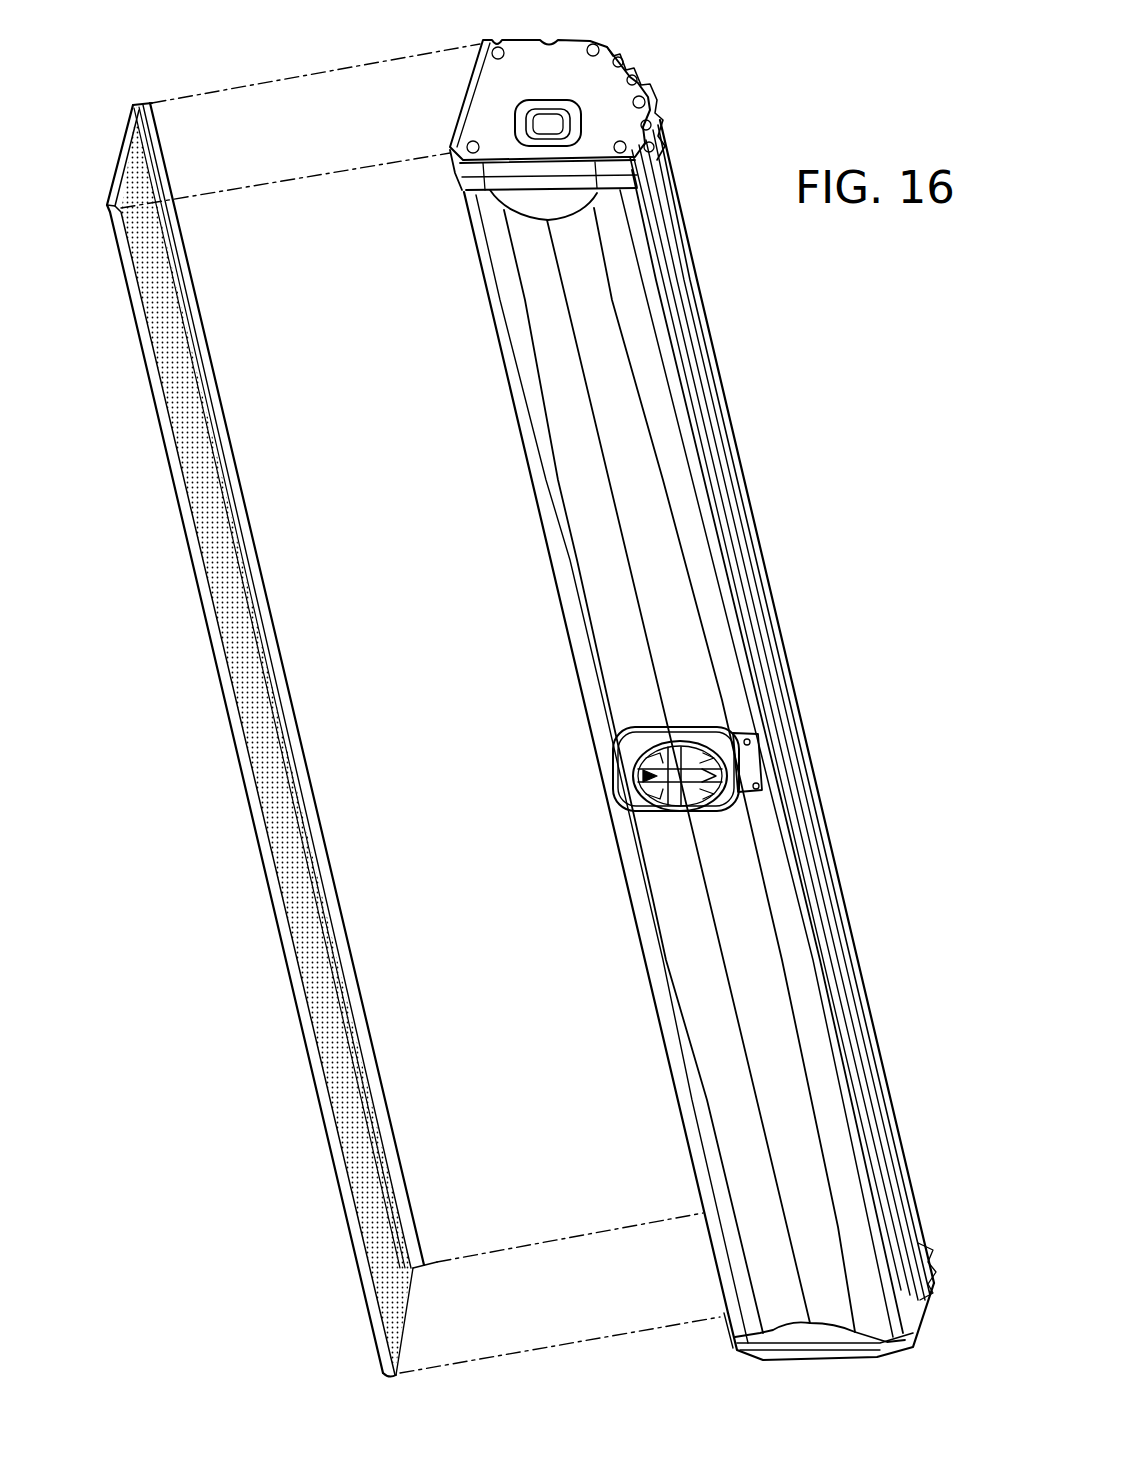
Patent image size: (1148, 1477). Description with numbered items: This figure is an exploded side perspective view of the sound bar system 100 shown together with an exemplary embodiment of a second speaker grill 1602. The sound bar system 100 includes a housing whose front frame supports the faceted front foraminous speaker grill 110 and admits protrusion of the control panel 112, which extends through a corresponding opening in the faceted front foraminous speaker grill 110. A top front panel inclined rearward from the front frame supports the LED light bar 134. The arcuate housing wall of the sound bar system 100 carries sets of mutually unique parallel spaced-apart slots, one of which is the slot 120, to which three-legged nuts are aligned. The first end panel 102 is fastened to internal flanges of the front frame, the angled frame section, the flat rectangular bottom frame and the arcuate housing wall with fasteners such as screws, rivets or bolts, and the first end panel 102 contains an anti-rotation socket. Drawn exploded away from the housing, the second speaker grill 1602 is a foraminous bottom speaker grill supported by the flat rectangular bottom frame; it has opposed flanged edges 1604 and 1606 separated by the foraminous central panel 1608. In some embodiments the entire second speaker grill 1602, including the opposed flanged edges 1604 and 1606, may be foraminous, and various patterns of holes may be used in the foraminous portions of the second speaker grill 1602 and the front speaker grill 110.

The sound bar system 100 is at (693, 681).
The first end panel 102 is at (547, 83).
The faceted front foraminous speaker grill 110 is at (638, 480).
The control panel 112 is at (613, 740).
The slot 120 is at (642, 105).
The LED light bar 134 is at (760, 772).
The second speaker grill 1602 is at (385, 704).
The flanged edge 1604 is at (160, 363).
The flanged edge 1606 is at (190, 273).
The foraminous central panel 1608 is at (185, 415).